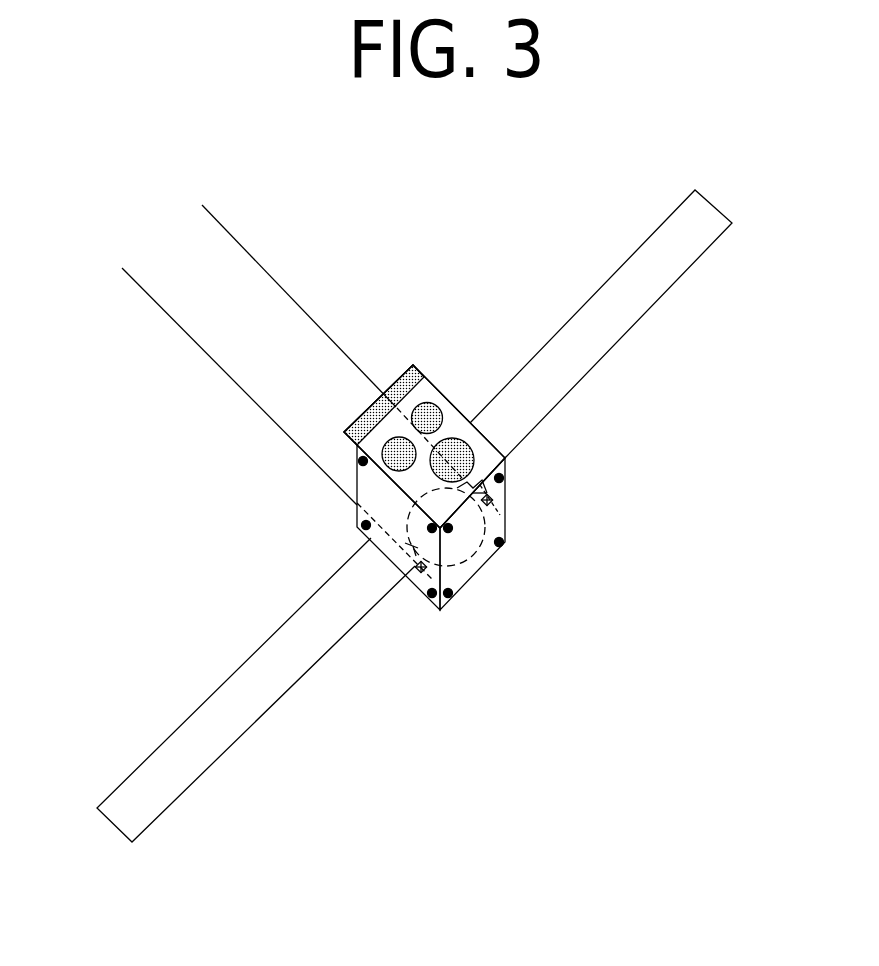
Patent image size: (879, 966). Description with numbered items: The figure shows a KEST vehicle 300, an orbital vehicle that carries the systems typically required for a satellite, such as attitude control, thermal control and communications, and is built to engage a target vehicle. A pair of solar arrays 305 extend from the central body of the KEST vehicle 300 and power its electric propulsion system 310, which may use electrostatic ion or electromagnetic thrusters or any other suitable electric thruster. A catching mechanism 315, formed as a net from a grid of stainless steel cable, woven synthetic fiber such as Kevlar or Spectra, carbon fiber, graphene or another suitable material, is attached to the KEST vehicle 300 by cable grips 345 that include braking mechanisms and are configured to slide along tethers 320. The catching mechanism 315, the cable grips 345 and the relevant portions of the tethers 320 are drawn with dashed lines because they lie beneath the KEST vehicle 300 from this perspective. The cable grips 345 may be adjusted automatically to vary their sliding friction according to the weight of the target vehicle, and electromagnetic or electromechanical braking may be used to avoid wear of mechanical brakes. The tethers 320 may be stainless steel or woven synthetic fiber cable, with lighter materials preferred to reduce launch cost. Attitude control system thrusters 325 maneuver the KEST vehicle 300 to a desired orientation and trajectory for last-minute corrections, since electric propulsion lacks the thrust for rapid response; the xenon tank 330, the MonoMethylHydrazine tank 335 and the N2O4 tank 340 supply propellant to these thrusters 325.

The KEST vehicle 300 is at (118, 121).
The solar arrays 305 is at (617, 342).
The electric propulsion system 310 is at (413, 365).
The catching mechanism 315 is at (487, 523).
The tethers 320 is at (285, 288).
The attitude control system (ACS) thrusters 325 is at (458, 595).
The xenon tank 330 is at (502, 455).
The MonoMethylHydrazine (MMH) tank 335 is at (385, 464).
The N2O4 tank 340 is at (441, 400).
The cable grips 345 is at (487, 497).